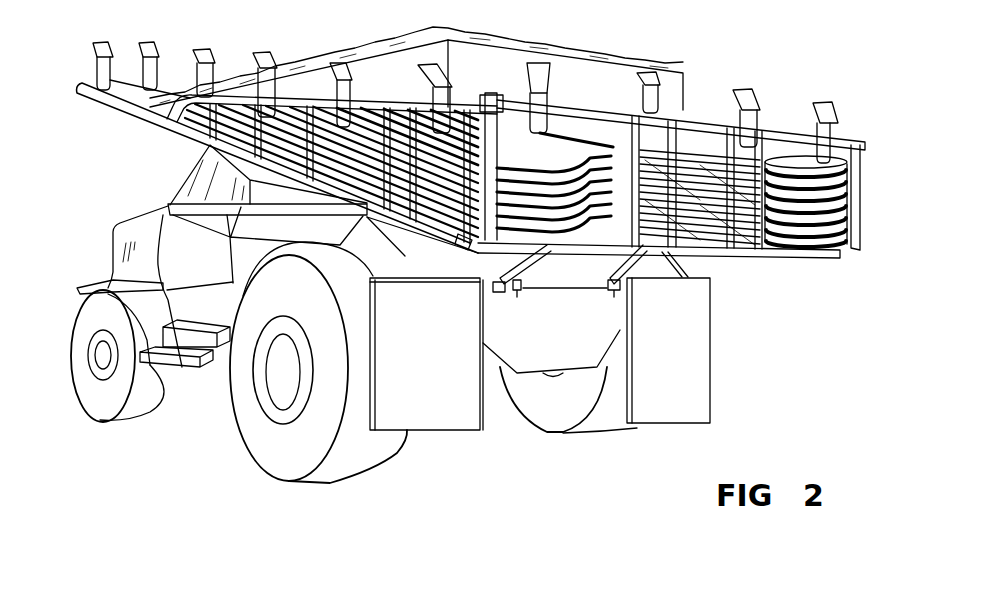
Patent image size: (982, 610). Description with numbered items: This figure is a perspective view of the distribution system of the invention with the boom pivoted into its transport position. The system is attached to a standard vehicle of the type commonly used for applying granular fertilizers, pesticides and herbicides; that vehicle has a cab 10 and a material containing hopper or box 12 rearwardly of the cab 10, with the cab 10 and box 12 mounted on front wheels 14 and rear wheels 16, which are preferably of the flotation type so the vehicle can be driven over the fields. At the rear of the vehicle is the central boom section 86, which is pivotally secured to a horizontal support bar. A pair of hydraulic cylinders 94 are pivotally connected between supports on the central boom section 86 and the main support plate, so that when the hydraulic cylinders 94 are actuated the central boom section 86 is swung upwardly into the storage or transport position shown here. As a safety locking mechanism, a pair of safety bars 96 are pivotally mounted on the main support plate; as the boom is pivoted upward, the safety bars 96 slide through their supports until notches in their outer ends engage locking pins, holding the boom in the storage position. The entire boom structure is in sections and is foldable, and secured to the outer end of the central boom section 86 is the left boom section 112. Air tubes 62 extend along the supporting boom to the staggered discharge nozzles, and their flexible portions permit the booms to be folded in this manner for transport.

The cab 10 is at (133, 218).
The box 12 is at (592, 75).
The front wheels 14 is at (100, 407).
The rear wheels 16 is at (273, 465).
The air tubes 62 is at (847, 213).
The central boom section 86 is at (710, 108).
The hydraulic cylinders 94 is at (547, 278).
The safety bars 96 is at (523, 270).
The left boom section 112 is at (140, 136).